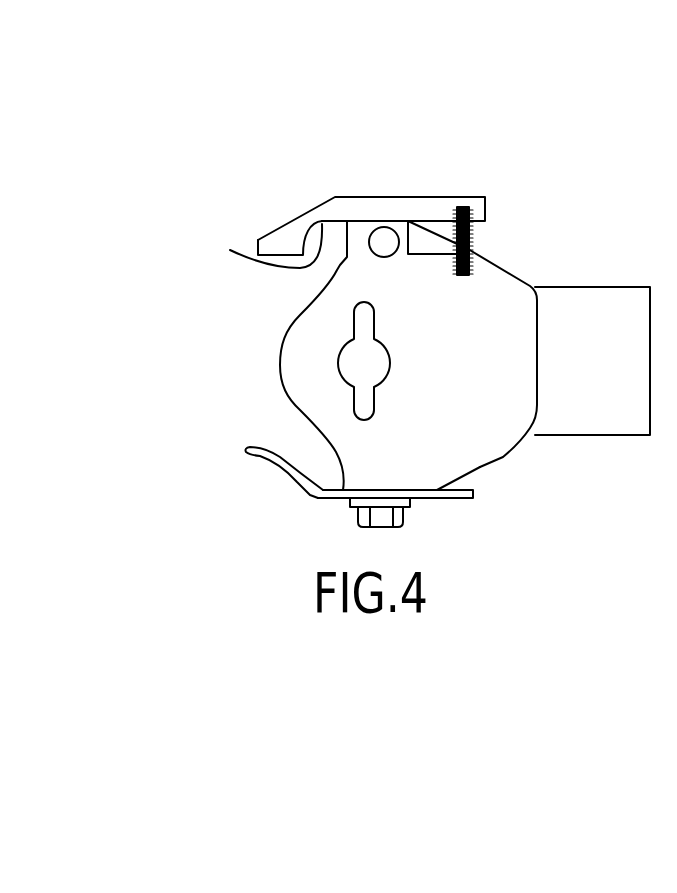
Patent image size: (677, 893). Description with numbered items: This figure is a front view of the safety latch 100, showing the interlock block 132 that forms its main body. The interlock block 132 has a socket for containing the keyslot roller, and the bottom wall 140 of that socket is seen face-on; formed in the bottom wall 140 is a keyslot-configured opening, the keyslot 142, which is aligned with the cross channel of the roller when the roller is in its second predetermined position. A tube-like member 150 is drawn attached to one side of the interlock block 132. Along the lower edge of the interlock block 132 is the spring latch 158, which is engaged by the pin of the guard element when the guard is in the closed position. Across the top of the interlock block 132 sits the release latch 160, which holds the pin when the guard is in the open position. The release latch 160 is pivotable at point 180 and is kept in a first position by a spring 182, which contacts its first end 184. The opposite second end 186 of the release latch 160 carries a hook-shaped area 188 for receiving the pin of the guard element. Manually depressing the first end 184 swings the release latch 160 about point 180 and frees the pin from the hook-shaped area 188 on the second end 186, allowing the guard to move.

The safety latch 100 is at (492, 260).
The interlock block 132 is at (483, 467).
The bottom wall 140 is at (300, 357).
The keyslot 142 is at (358, 304).
The tube 150 is at (568, 287).
The spring latch 158 is at (318, 496).
The release latch 160 is at (301, 216).
The pivot point 180 is at (370, 232).
The spring 182 is at (476, 256).
The first end 184 is at (475, 197).
The second end 186 is at (258, 249).
The hook-shaped area 188 is at (230, 250).